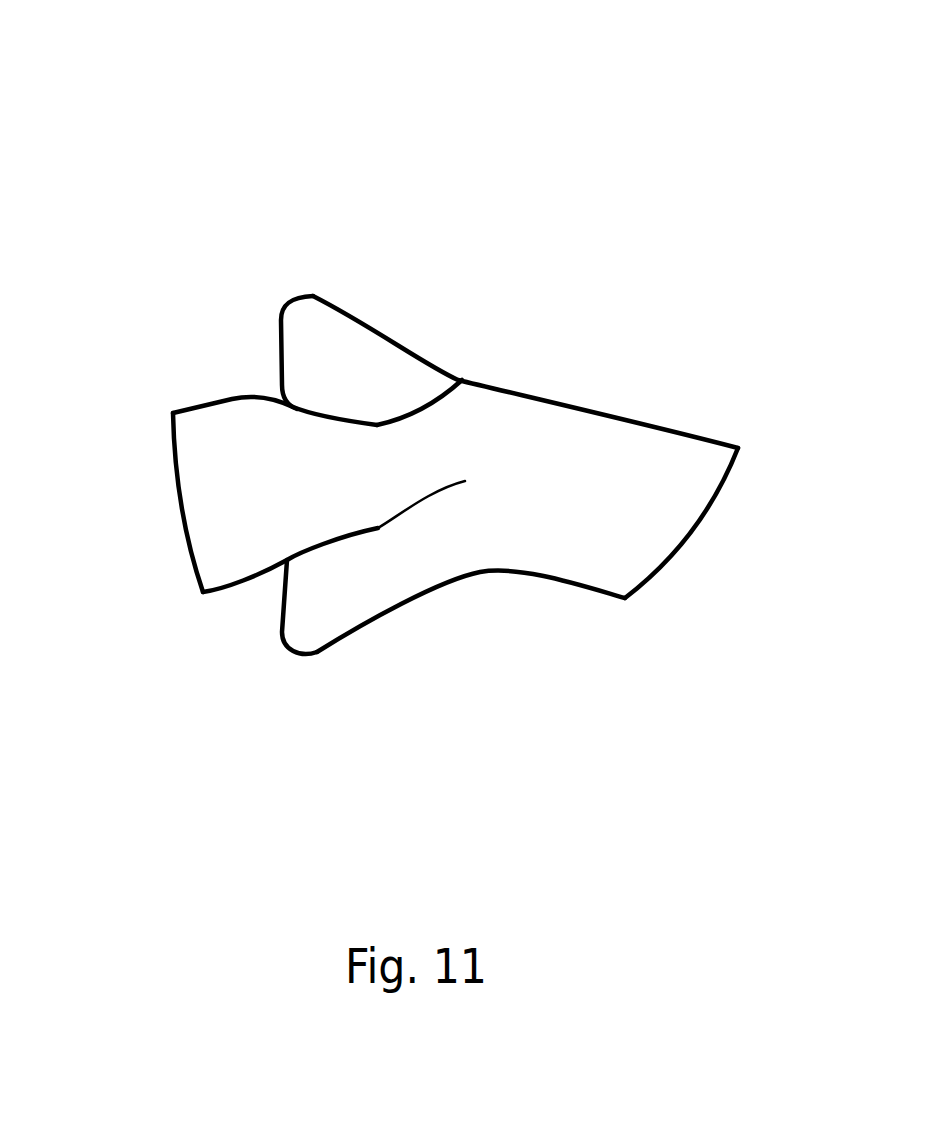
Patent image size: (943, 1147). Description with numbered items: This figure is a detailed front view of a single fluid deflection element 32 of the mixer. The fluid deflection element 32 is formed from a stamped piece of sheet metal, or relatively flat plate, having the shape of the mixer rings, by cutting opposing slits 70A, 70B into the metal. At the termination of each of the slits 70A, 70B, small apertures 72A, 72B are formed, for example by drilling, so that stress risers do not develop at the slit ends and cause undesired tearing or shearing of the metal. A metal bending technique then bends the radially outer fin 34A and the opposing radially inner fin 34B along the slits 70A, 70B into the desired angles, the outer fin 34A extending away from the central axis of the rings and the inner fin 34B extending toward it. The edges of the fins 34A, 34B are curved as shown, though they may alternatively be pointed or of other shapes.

The fluid deflection element 32 is at (276, 645).
The radially outer deflection member or fin 34A is at (317, 335).
The radially inner deflection member or fin 34B is at (308, 632).
The slit 70A is at (312, 407).
The slit 70B is at (307, 553).
The small aperture 72A is at (470, 383).
The small aperture 72B is at (465, 481).